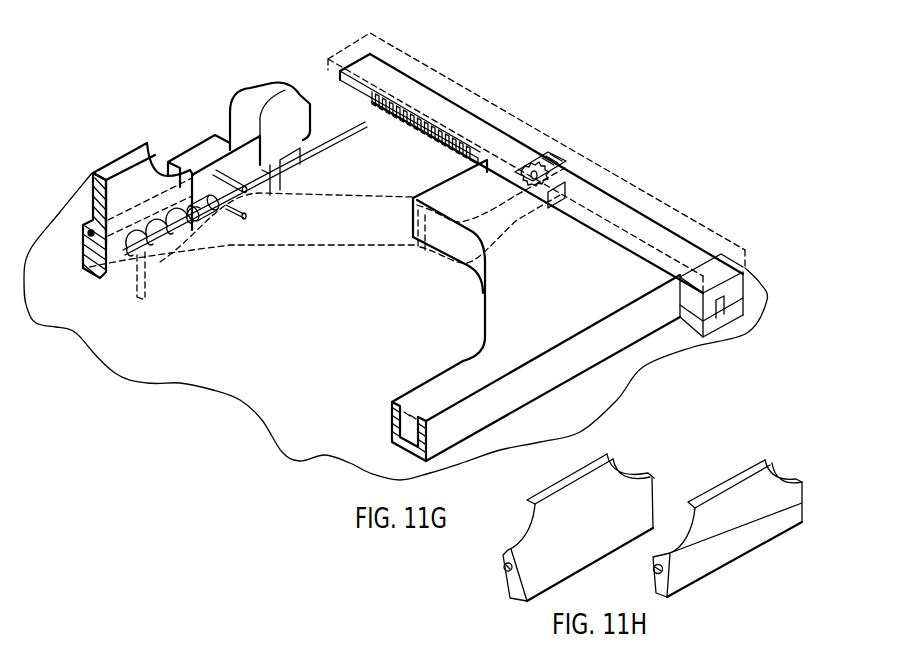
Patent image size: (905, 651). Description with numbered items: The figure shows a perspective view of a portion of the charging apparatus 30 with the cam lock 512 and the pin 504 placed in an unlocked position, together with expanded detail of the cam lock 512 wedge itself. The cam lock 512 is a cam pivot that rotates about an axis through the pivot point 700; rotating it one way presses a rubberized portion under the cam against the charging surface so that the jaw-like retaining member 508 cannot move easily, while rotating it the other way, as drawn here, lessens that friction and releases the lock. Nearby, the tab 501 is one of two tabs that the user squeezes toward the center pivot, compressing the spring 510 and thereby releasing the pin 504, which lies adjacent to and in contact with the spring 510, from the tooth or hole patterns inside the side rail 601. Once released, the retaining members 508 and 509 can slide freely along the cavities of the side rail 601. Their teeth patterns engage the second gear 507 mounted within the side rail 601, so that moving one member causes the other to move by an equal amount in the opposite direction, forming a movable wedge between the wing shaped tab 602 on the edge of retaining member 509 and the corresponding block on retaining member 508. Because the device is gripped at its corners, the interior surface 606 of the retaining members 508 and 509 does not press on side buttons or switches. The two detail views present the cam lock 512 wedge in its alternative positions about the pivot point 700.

In FIG. 11G, the charging apparatus 30 is at (648, 110).
In FIG. 11G, the tab 501 is at (263, 93).
In FIG. 11G, the pin 504 is at (323, 150).
In FIG. 11G, the second gear 507 is at (540, 160).
In FIG. 11G, the retaining member 508 is at (380, 173).
In FIG. 11G, the retaining member 509 is at (510, 305).
In FIG. 11G, the spring 510 is at (162, 235).
In FIG. 11G, the cam lock 512 is at (146, 142).
In FIG. 11H, the cam lock 512 is at (607, 455).
In FIG. 11G, the side rail 601 is at (377, 43).
In FIG. 11G, the wing shaped tab 602 is at (490, 180).
In FIG. 11G, the interior surface 606 is at (393, 415).
In FIG. 11G, the pivot point 700 is at (85, 245).